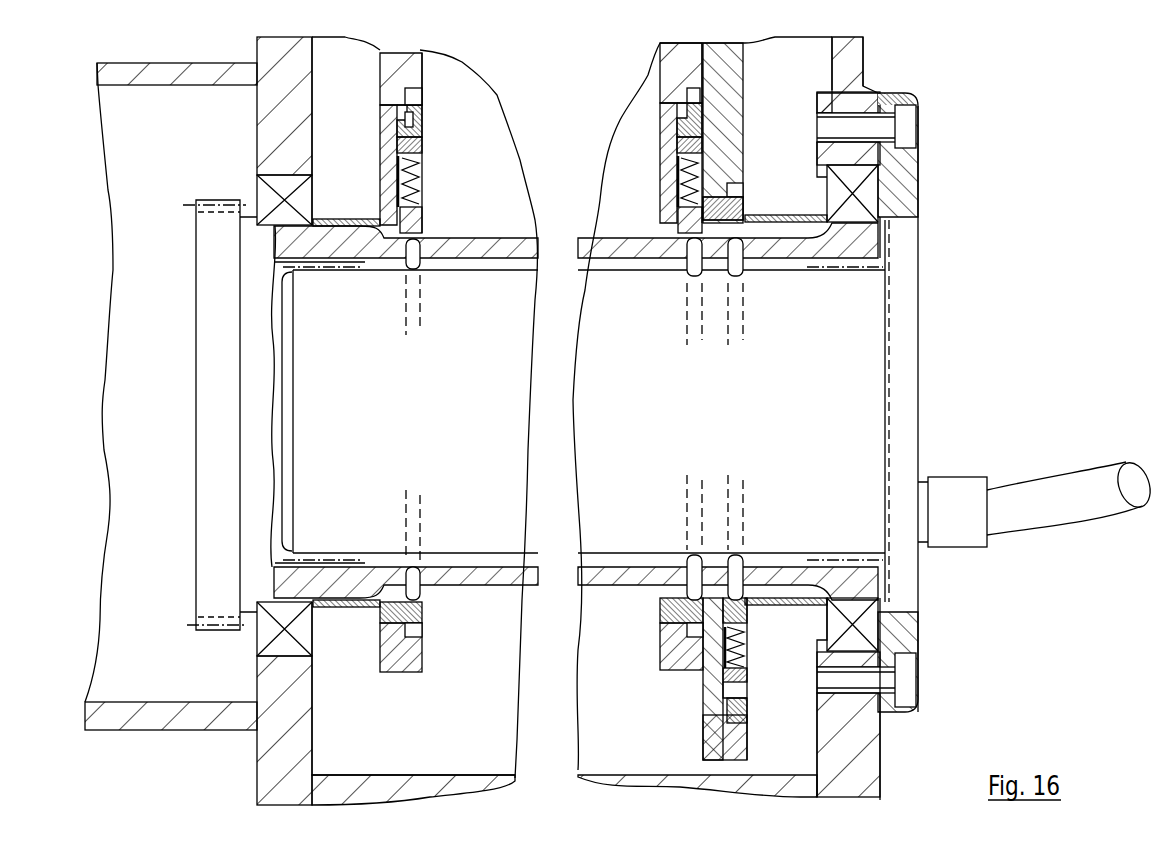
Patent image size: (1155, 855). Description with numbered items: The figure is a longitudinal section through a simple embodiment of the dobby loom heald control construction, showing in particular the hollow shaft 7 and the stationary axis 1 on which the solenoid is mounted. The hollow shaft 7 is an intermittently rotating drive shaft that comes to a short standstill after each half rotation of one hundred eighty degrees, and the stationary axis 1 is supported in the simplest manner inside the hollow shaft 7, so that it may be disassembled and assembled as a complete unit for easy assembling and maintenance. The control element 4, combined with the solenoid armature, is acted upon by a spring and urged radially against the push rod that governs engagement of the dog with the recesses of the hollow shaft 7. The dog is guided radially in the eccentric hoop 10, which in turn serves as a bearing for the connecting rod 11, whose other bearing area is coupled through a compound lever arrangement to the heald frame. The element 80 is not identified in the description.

The stationary axis 1 is at (850, 300).
The control element 4 is at (692, 290).
The hollow shaft 7 is at (865, 580).
The eccentric hoop 10 is at (660, 144).
The connecting rod 11 is at (683, 70).
The housing wall 80 is at (649, 782).